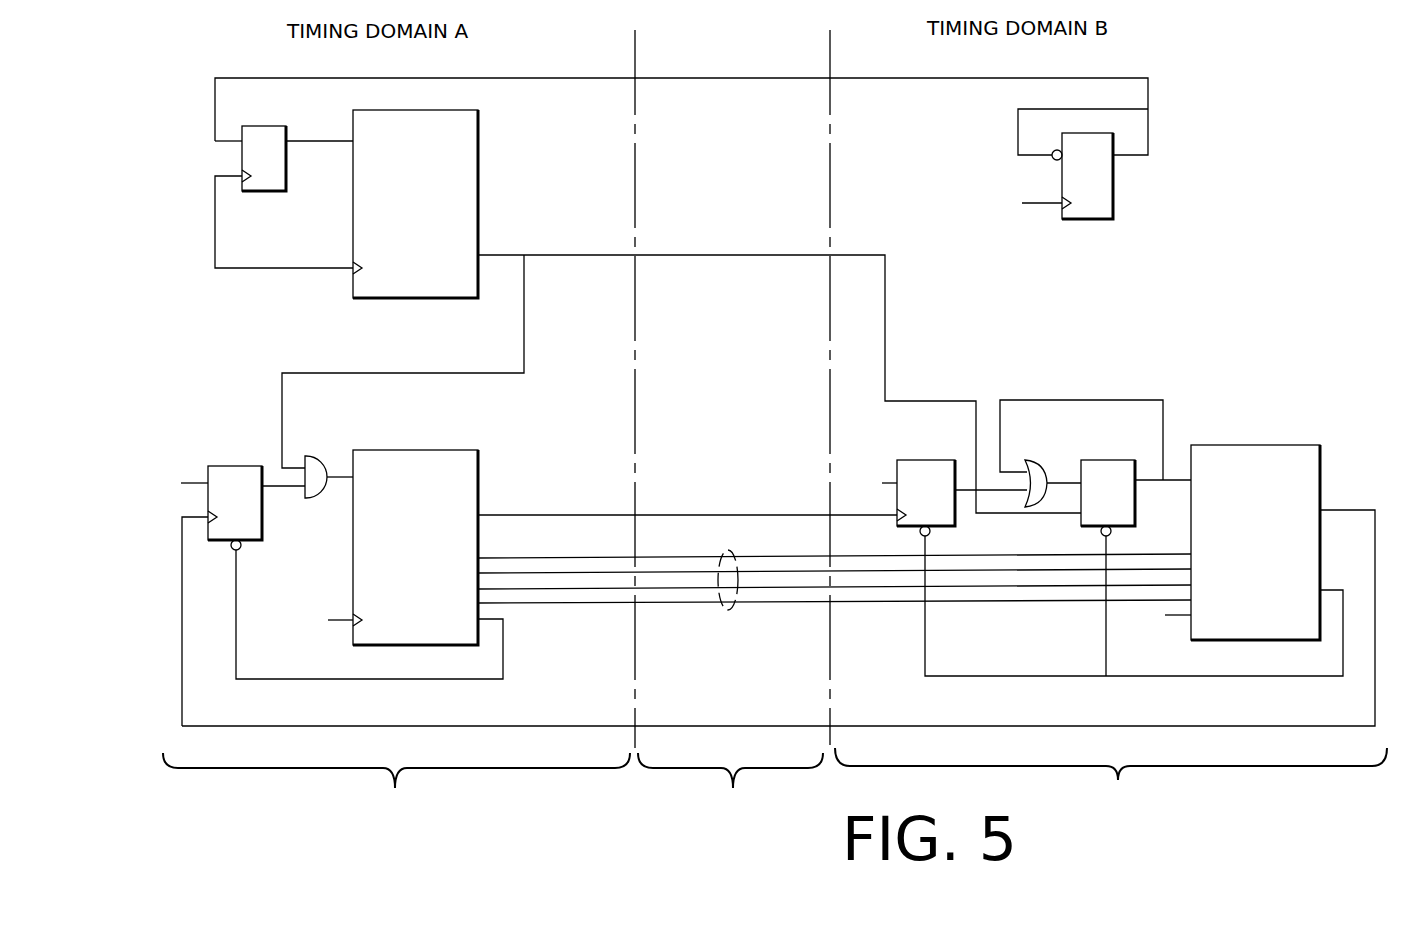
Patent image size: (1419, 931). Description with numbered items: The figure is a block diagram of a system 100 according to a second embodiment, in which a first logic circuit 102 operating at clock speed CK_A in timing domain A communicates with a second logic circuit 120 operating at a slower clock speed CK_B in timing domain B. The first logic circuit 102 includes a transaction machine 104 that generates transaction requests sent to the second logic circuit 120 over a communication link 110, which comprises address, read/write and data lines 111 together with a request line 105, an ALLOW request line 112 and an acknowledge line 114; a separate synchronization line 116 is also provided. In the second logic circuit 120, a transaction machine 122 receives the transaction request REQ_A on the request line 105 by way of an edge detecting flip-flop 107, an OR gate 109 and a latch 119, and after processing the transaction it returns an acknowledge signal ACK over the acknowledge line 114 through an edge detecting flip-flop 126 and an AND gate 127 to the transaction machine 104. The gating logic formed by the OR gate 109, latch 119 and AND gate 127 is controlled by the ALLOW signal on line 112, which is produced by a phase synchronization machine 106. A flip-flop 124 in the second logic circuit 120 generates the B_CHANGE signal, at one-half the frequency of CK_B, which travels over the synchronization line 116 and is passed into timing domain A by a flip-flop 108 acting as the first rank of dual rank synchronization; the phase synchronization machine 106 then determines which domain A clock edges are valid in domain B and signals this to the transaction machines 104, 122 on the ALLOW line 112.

The system 100 is at (1318, 825).
The first logic circuit 102 is at (396, 782).
The transaction machine 104 is at (478, 476).
The request line 105 is at (688, 515).
The phase synchronization machine 106 is at (478, 152).
The edge detecting flip-flop 107 is at (912, 460).
The flip-flop 108 is at (255, 191).
The OR gate 109 is at (1037, 459).
The communication link 110 is at (732, 421).
The data lines 111 is at (728, 610).
The ALLOW request line 112 is at (688, 255).
The acknowledge line 114 is at (688, 726).
The synchronization line 116 is at (688, 78).
The latch 119 is at (1108, 459).
The second logic circuit 120 is at (1111, 777).
The transaction machine 122 is at (1222, 445).
The flip-flop 124 is at (1073, 219).
The edge detecting flip-flop 126 is at (218, 466).
The AND gate 127 is at (320, 457).